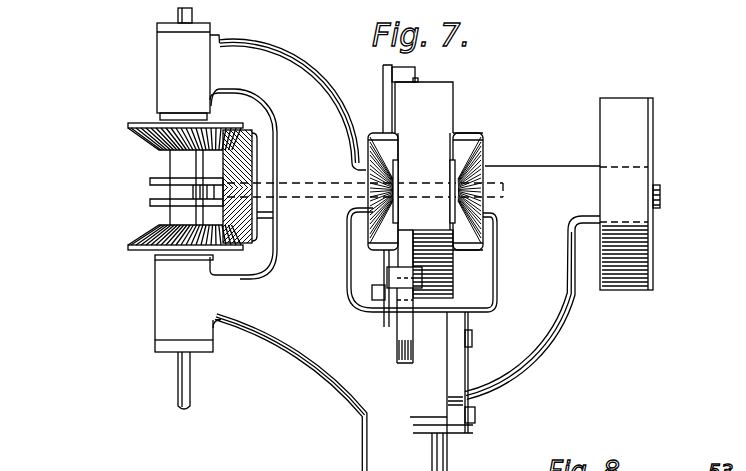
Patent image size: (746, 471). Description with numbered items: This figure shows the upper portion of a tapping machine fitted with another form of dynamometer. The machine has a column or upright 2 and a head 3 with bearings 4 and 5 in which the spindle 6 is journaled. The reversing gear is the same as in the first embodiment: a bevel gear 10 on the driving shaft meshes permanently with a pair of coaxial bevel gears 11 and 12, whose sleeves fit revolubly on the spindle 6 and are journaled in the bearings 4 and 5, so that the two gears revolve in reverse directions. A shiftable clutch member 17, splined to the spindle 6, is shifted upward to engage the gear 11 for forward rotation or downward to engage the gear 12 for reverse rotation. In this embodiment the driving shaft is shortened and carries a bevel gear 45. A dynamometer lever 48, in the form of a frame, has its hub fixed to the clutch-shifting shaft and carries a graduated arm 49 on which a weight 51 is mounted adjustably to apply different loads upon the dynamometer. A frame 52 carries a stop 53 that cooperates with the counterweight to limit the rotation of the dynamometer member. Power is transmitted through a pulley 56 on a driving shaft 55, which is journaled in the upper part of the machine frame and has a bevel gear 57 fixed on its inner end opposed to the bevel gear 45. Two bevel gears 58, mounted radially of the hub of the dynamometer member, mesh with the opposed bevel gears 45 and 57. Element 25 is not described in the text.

The column or upright 2 is at (290, 392).
The head 3 is at (306, 95).
The bearing 4 is at (158, 77).
The bearing 5 is at (160, 290).
The spindle 6 is at (178, 373).
The bevel gear 10 is at (247, 149).
The bevel gear 11 is at (155, 132).
The bevel gear 12 is at (160, 233).
The shiftable clutch member 17 is at (170, 168).
The pinion 25 is at (160, 192).
The bevel gear 45 is at (378, 173).
The dynamometer lever 48 is at (435, 113).
The graduated arm 49 is at (402, 332).
The weight 51 is at (457, 290).
The frame 52 is at (384, 113).
The stop 53 is at (408, 72).
The driving shaft 55 is at (660, 197).
The pulley 56 is at (647, 122).
The bevel gear 57 is at (485, 159).
The bevel gears 58 is at (475, 133).